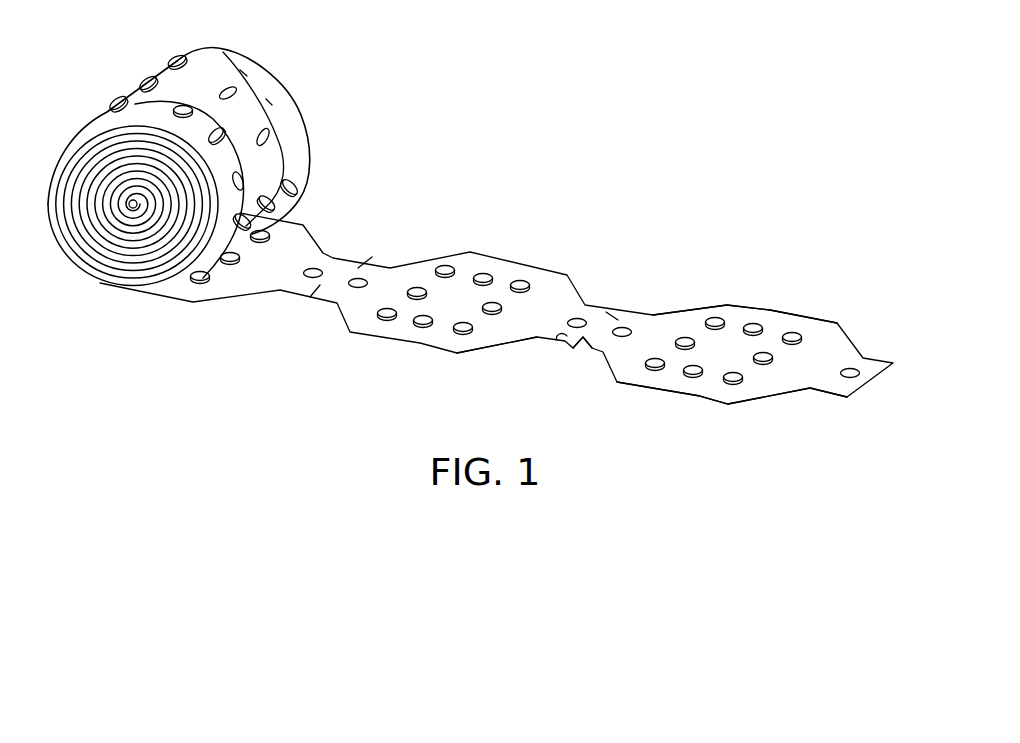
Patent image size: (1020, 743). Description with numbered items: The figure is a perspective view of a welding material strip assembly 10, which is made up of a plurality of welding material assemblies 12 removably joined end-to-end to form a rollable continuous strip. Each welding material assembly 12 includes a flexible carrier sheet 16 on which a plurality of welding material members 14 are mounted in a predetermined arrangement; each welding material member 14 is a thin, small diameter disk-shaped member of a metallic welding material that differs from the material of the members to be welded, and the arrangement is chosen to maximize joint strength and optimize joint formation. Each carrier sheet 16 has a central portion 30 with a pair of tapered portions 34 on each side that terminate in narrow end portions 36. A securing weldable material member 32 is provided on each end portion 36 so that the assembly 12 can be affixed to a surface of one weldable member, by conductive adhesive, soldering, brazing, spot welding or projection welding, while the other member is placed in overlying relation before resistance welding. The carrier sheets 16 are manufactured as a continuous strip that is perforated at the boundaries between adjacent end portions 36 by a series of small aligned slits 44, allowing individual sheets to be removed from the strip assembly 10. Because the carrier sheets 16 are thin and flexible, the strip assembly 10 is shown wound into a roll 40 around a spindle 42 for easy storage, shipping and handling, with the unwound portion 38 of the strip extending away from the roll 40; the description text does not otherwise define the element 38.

The welding material strip assembly 10 is at (598, 203).
The welding material assembly 12 is at (587, 295).
The welding material member 14 is at (483, 272).
The carrier sheet 16 is at (767, 383).
The central portion 30 is at (718, 348).
The securing weldable material member 32 is at (625, 329).
The tapered portion 34 is at (485, 323).
The end portion 36 is at (555, 343).
The unwound portion 38 is at (348, 192).
The roll 40 is at (98, 84).
The spindle 42 is at (136, 214).
The slits 44 is at (365, 262).